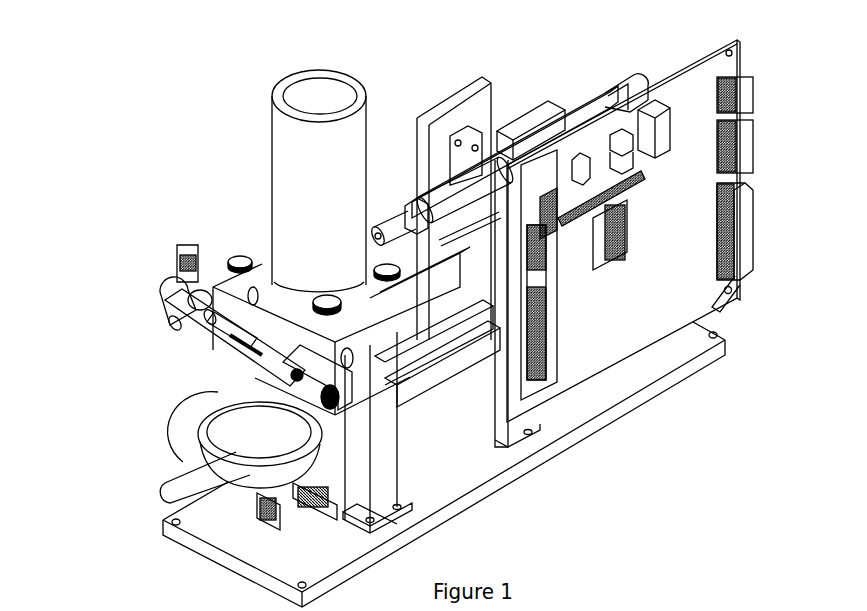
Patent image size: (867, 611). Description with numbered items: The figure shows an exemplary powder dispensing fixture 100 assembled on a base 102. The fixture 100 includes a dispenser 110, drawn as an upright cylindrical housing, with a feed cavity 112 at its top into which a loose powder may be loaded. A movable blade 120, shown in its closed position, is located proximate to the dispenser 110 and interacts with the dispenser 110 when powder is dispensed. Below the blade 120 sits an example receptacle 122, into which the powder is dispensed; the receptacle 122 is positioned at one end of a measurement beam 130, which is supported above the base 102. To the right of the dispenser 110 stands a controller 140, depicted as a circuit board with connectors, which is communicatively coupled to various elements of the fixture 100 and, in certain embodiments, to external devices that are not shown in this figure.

The powder dispensing fixture 100 is at (213, 48).
The base plate 102 is at (248, 545).
The dispenser 110 is at (292, 162).
The feed cavity 112 is at (320, 92).
The movable blade 120 is at (282, 372).
The receptacle 122 is at (243, 435).
The measurement beam 130 is at (438, 385).
The controller 140 is at (627, 312).